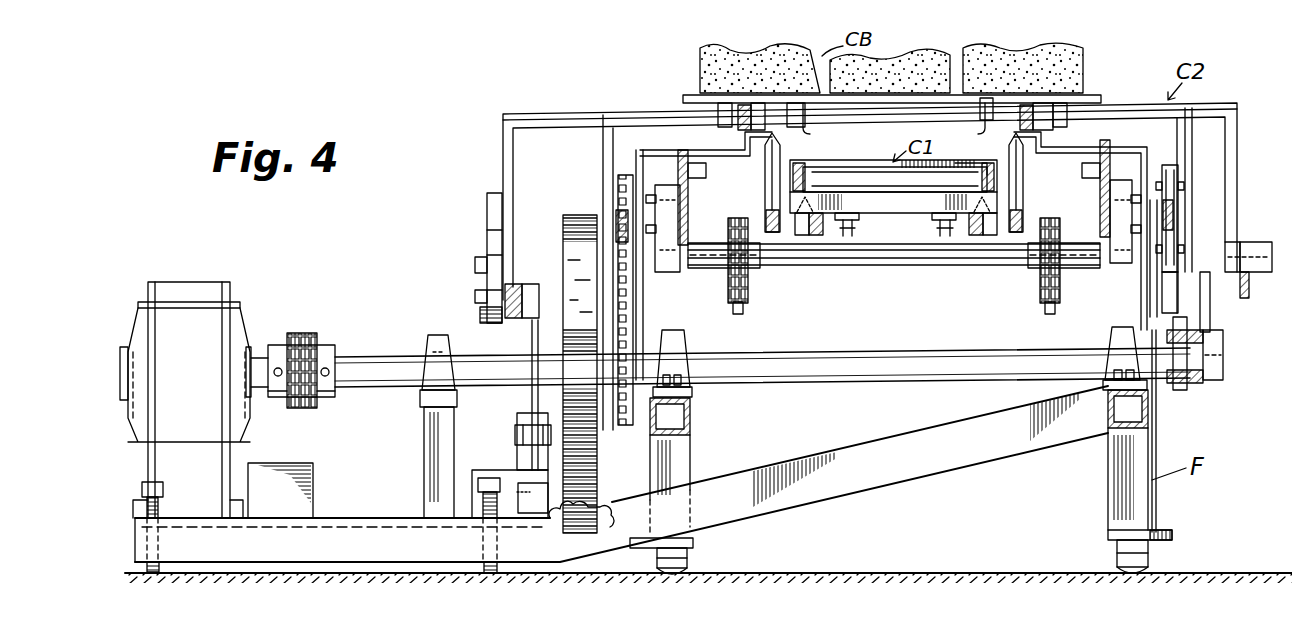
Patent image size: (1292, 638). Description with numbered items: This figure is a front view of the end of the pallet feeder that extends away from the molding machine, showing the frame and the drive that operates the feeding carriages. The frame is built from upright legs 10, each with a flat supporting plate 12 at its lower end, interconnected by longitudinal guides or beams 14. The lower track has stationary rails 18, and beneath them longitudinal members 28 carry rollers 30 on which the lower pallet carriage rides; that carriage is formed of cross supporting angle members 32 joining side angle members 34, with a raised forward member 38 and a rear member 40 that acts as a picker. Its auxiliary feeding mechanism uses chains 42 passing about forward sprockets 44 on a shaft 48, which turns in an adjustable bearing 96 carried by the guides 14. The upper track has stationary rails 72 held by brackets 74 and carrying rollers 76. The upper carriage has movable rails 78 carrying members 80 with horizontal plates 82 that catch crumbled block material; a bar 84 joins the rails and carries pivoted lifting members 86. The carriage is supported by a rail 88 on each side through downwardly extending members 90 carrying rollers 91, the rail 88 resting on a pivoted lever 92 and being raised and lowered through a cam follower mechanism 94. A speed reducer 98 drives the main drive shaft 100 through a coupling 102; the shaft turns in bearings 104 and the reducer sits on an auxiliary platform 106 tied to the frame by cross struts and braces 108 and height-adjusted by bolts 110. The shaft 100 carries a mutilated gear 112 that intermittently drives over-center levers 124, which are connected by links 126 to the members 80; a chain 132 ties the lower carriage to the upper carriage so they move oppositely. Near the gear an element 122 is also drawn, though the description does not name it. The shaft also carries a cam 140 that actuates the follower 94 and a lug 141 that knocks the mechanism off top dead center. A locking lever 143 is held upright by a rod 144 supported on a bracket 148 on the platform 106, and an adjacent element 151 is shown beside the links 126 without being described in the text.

The legs 10 is at (692, 449).
The flat supporting plate 12 is at (692, 543).
The longitudinal guides or beams 14 is at (688, 222).
The stationary rails 18 is at (766, 168).
The longitudinal members 28 is at (816, 236).
The rollers 30 is at (802, 236).
The cross supporting angle members 32 is at (952, 165).
The side angle members 34 is at (800, 182).
The forward member 38 is at (825, 162).
The rear member 40 is at (908, 211).
The chains 42 is at (736, 314).
The forward sprockets 44 is at (748, 292).
The shaft 48 is at (855, 265).
The stationary rails 72 is at (760, 123).
The brackets 74 is at (686, 150).
The rollers 76 is at (740, 128).
The movable rails 78 is at (683, 99).
The members 80 is at (503, 147).
The plate 82 is at (545, 112).
The bar 84 is at (880, 160).
The lifting members 86 is at (810, 124).
The rail 88 is at (614, 222).
The downwardly extending members 90 is at (602, 152).
The rollers 91 is at (612, 184).
The pivoted lever 92 is at (638, 176).
The cam follower mechanism 94 is at (1192, 386).
The adjustable bearing 96 is at (672, 275).
The speed reducer 98 is at (220, 285).
The main drive shaft 100 is at (373, 356).
The coupling 102 is at (304, 334).
The bearings 104 is at (422, 380).
The auxiliary platform 106 is at (348, 516).
The cross struts and braces 108 is at (875, 480).
The bolts 110 is at (162, 566).
The mutilated gear 112 is at (596, 545).
The gear 122 is at (621, 405).
The over-center levers 124 is at (505, 300).
The links 126 is at (490, 258).
The chain 132 is at (936, 229).
The cam 140 is at (1186, 395).
The lug 141 is at (1206, 312).
The locking lever 143 is at (531, 399).
The rod 144 is at (516, 448).
The bracket 148 is at (515, 423).
The block 151 is at (530, 290).